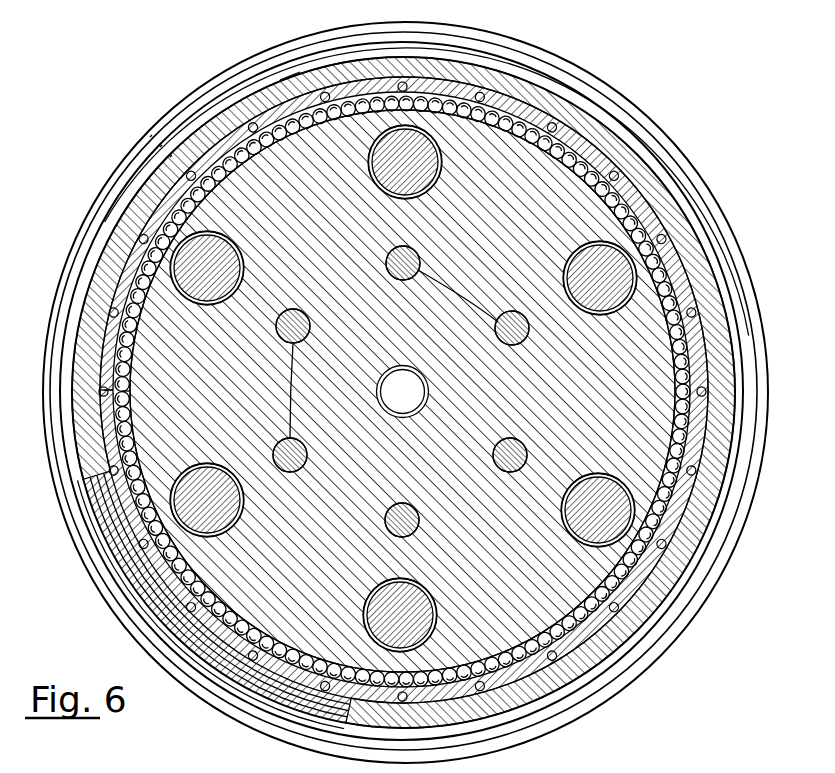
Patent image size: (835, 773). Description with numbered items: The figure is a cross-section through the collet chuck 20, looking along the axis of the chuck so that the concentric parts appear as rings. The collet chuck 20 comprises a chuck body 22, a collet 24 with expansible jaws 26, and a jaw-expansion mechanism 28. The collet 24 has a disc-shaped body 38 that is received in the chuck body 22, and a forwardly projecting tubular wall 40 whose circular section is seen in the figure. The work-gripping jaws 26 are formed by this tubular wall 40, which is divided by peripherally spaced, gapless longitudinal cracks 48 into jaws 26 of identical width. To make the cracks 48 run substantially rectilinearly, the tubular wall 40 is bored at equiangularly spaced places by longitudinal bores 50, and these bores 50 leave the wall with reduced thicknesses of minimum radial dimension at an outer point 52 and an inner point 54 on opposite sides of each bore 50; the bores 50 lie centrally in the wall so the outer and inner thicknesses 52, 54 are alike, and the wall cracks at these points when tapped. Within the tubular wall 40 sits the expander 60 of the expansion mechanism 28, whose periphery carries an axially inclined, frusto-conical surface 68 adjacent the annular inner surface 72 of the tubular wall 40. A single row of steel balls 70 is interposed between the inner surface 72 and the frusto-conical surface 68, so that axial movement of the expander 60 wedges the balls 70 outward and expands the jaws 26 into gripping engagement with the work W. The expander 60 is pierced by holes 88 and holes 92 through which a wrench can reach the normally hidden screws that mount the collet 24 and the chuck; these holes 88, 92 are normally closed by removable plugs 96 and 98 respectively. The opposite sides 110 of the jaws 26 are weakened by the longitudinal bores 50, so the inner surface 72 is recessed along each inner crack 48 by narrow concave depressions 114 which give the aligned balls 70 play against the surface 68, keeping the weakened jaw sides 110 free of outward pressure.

The collet chuck 20 is at (627, 70).
The chuck body 22 is at (749, 225).
The collet 24 is at (657, 136).
The expansible jaws 26 is at (208, 112).
The jaw-expansion mechanism 28 is at (735, 266).
The collet body 38 is at (92, 536).
The tubular wall 40 is at (562, 110).
The work W is at (572, 104).
The longitudinal cracks 48 is at (354, 70).
The longitudinal bores 50 is at (132, 198).
The reduced outer wall thickness 52 is at (314, 60).
The reduced inner wall thickness 54 is at (284, 68).
The expander 60 is at (700, 368).
The frusto-conical surface 68 is at (640, 122).
The steel balls 70 is at (405, 84).
The inner surface 72 is at (700, 423).
The holes 88 is at (504, 316).
The holes 92 is at (436, 170).
The removable plugs 96 is at (290, 440).
The removable plugs 98 is at (432, 196).
The jaw sides 110 is at (412, 94).
The depressions 114 is at (113, 581).